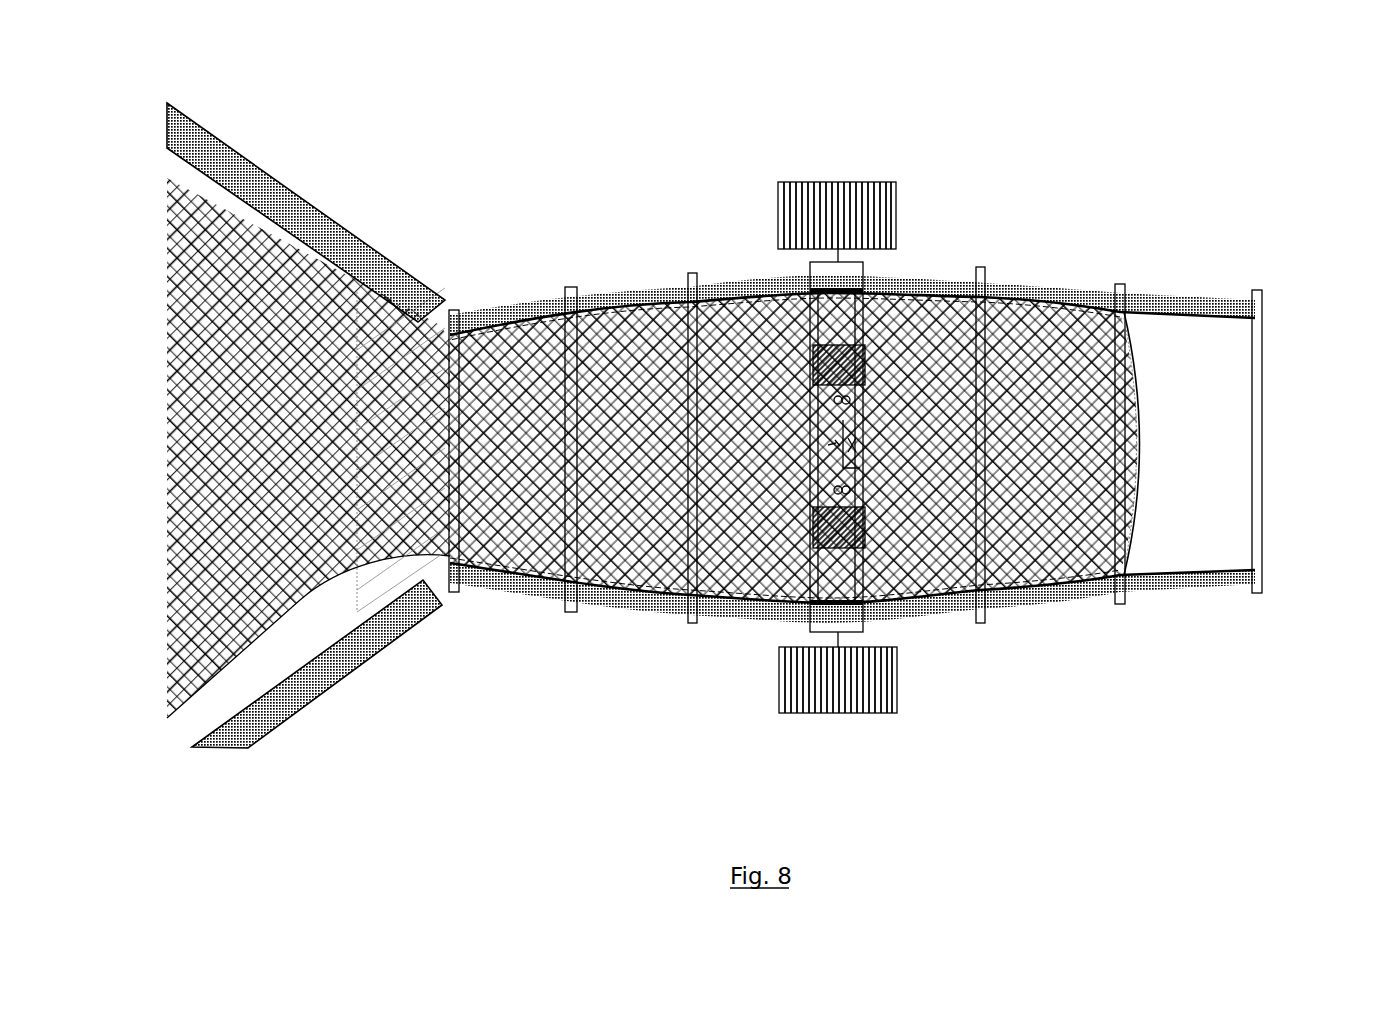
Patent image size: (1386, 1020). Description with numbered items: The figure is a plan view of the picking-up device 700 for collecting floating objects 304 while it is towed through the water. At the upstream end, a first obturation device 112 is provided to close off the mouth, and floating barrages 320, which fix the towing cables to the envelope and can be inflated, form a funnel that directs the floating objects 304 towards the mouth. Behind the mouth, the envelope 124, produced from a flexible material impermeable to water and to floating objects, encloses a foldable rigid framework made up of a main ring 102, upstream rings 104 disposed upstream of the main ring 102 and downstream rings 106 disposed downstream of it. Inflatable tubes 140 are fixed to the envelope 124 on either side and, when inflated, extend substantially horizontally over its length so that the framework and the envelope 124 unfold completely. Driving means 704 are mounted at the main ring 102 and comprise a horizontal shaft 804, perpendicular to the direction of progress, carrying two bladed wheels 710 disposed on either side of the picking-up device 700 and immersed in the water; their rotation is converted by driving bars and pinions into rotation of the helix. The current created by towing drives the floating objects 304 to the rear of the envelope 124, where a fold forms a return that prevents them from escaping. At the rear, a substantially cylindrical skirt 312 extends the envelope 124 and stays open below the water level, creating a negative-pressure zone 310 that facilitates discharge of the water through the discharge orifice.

The picking-up device 700 is at (721, 404).
The driving means 704 is at (873, 419).
The bladed wheel 710 is at (828, 182).
The shaft 804 is at (836, 257).
The main ring 102 is at (855, 267).
The upstream ring 104 is at (573, 298).
The downstream ring 106 is at (983, 272).
The envelope 124 is at (1075, 320).
The inflatable tube 140 is at (528, 305).
The first obturation device 112 is at (170, 340).
The floating barrage 320 is at (292, 205).
The negative-pressure zone 310 is at (1218, 434).
The floating objects 304 is at (1067, 545).
The skirt 312 is at (1215, 528).